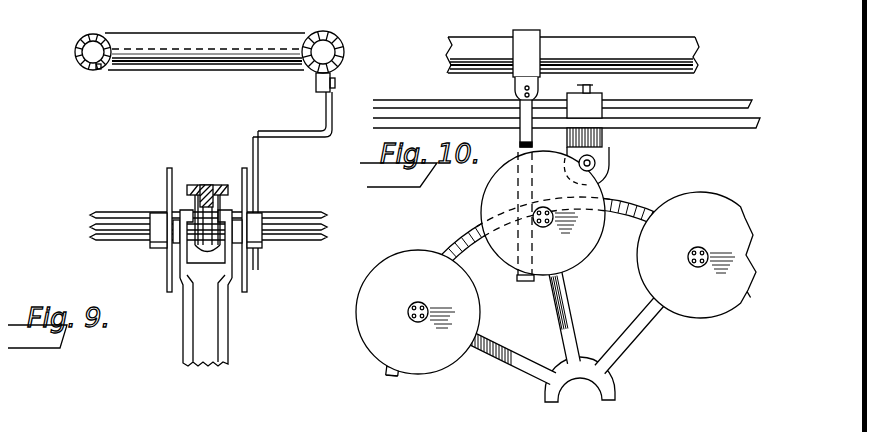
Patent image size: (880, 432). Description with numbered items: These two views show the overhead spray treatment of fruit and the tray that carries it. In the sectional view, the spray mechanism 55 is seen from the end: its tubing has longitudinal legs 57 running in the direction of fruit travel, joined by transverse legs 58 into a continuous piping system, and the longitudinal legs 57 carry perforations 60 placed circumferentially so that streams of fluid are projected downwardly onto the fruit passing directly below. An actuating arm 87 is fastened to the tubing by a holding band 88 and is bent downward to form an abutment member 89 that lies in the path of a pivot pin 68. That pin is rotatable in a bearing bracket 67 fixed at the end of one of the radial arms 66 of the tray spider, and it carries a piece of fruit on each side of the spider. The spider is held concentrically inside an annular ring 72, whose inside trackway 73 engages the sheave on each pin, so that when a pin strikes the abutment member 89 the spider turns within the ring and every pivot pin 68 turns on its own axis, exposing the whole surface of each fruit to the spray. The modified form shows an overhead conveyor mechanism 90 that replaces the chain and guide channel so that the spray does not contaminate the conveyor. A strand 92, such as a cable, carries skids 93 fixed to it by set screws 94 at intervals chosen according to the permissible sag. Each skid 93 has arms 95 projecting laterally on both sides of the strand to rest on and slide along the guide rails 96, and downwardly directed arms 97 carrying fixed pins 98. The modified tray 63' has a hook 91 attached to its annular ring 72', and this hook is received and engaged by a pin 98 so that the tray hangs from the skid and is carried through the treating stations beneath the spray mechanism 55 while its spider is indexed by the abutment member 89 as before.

In FIG. 9, the spray mechanism 55 is at (186, 27).
In FIG. 10, the spray mechanism 55 is at (636, 31).
In FIG. 9, the longitudinal legs 57 is at (76, 53).
In FIG. 9, the transverse legs 58 is at (262, 45).
In FIG. 9, the perforations 60 is at (96, 69).
In FIG. 10, the tray 63' is at (568, 282).
In FIG. 9, the arms 66 is at (210, 318).
In FIG. 9, the bearing bracket 67 is at (230, 257).
In FIG. 9, the pivot pin 68 is at (177, 233).
In FIG. 9, the annular ring 72 is at (201, 197).
In FIG. 10, the annular ring 72' is at (418, 296).
In FIG. 9, the inside trackway 73 is at (208, 188).
In FIG. 9, the actuating arm 87 is at (330, 127).
In FIG. 10, the actuating arm 87 is at (520, 133).
In FIG. 9, the holding band 88 is at (335, 67).
In FIG. 10, the holding band 88 is at (523, 40).
In FIG. 9, the abutment member 89 is at (259, 181).
In FIG. 10, the abutment member 89 is at (523, 146).
In FIG. 10, the overhead conveyor mechanism 90 is at (608, 142).
In FIG. 10, the hook 91 is at (607, 166).
In FIG. 10, the strand 92 is at (716, 107).
In FIG. 10, the skid 93 is at (593, 100).
In FIG. 10, the set screw 94 is at (578, 88).
In FIG. 10, the arms 95 is at (587, 115).
In FIG. 10, the guide rails 96 is at (697, 122).
In FIG. 10, the downwardly directed arms 97 is at (570, 135).
In FIG. 10, the pin 98 is at (574, 173).